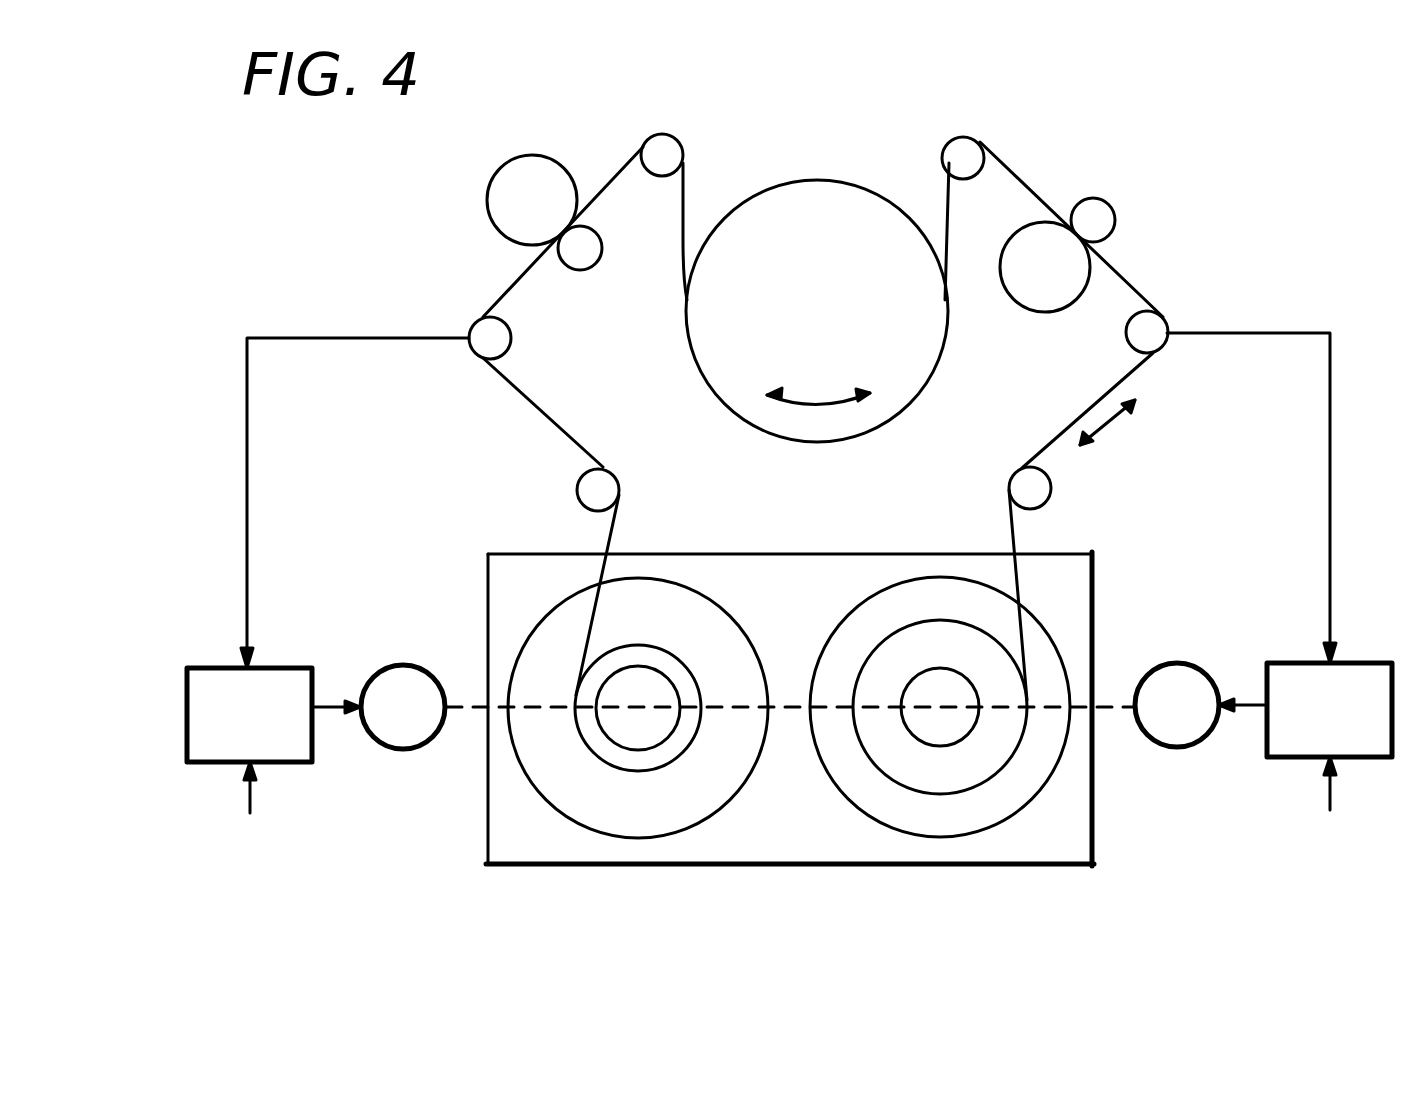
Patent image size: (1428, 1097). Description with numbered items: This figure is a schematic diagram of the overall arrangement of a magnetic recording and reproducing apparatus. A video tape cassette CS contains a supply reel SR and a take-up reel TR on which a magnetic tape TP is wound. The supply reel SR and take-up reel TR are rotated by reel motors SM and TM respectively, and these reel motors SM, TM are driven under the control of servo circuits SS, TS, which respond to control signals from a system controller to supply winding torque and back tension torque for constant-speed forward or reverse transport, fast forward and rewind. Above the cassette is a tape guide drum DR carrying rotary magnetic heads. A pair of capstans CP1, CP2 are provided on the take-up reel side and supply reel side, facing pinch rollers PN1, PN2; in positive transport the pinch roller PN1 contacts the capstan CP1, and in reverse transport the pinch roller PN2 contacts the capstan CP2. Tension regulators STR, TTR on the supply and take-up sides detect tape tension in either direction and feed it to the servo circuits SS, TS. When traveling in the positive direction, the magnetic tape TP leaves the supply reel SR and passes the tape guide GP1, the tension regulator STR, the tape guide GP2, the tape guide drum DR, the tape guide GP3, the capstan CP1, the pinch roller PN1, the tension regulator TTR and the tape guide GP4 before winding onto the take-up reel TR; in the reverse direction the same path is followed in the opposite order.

The magnetic tape TP is at (525, 400).
The tape guide GP2 is at (643, 150).
The pinch roller PN2 is at (487, 200).
The capstan CP2 is at (588, 270).
The tension regulator STR is at (507, 352).
The tape guide GP1 is at (577, 491).
The tape guide drum DR is at (835, 180).
The tape guide GP3 is at (977, 146).
The capstan CP1 is at (1115, 217).
The pinch roller PN1 is at (1050, 312).
The tension regulator TTR is at (1158, 322).
The tape guide GP4 is at (1051, 480).
The video tape cassette CS is at (487, 602).
The supply reel SR is at (655, 668).
The take-up reel TR is at (927, 667).
The servo circuit SS is at (220, 668).
The reel motor SM is at (395, 667).
The reel motor TM is at (1188, 663).
The servo circuit TS is at (1366, 663).